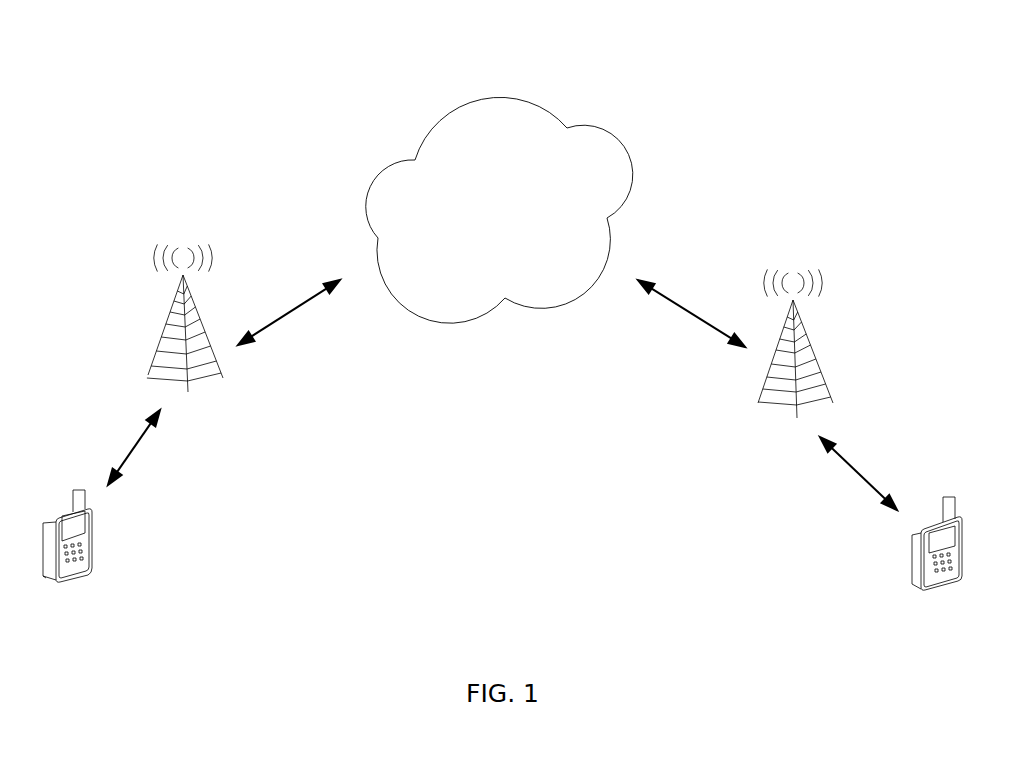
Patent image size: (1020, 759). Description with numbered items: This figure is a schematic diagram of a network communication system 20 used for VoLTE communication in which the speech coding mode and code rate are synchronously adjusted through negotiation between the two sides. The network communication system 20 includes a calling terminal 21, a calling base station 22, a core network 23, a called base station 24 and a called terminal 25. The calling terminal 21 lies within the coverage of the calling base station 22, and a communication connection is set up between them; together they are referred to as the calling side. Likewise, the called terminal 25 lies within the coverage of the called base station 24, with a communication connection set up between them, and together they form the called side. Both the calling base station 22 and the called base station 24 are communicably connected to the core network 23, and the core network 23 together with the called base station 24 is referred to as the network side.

The network communication system 20 is at (509, 41).
The calling terminal 21 is at (87, 542).
The calling base station 22 is at (207, 360).
The core network 23 is at (465, 305).
The called base station 24 is at (777, 388).
The called terminal 25 is at (920, 575).